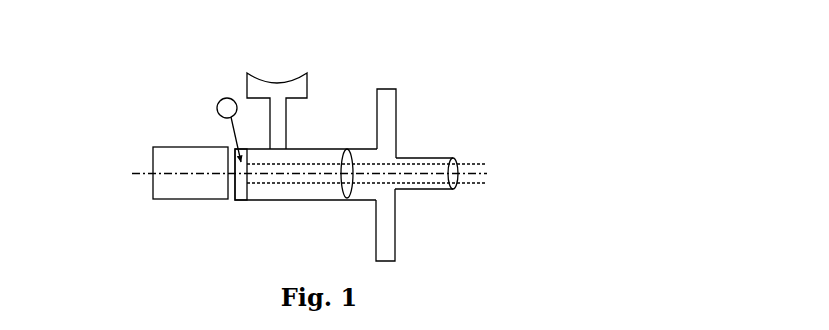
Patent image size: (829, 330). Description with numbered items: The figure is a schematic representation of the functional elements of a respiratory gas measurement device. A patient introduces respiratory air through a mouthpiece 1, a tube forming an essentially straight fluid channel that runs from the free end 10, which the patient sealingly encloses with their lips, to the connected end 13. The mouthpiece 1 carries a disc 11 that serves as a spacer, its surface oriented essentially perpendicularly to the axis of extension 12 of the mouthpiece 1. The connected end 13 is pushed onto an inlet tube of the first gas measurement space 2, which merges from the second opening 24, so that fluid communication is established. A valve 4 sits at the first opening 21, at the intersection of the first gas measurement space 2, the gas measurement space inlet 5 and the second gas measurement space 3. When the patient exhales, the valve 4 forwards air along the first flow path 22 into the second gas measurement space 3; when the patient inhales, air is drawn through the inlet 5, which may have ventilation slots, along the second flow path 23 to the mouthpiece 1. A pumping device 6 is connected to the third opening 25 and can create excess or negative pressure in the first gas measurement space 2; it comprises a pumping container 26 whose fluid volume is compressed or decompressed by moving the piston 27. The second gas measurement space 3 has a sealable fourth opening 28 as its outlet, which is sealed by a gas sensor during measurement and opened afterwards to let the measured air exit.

The mouthpiece 1 is at (434, 121).
The first gas measurement space 2 is at (288, 199).
The second gas measurement space 3 is at (172, 189).
The valve 4 is at (238, 199).
The gas measurement space inlet 5 is at (214, 105).
The pumping device 6 is at (316, 75).
The free end of mouthpiece 10 is at (459, 157).
The disc 11 is at (397, 89).
The axis of extension 12 is at (434, 191).
The connected end of mouthpiece 13 is at (344, 148).
The first opening of gas measurement space 21 is at (250, 194).
The first flow path 22 is at (402, 196).
The second flow path 23 is at (296, 164).
The second opening of gas measurement space 24 is at (336, 195).
The third opening of gas measurement space 25 is at (275, 146).
The pumping container 26 is at (257, 91).
The piston 27 is at (281, 82).
The gas measurement space outlet, fourth opening 28 is at (150, 162).